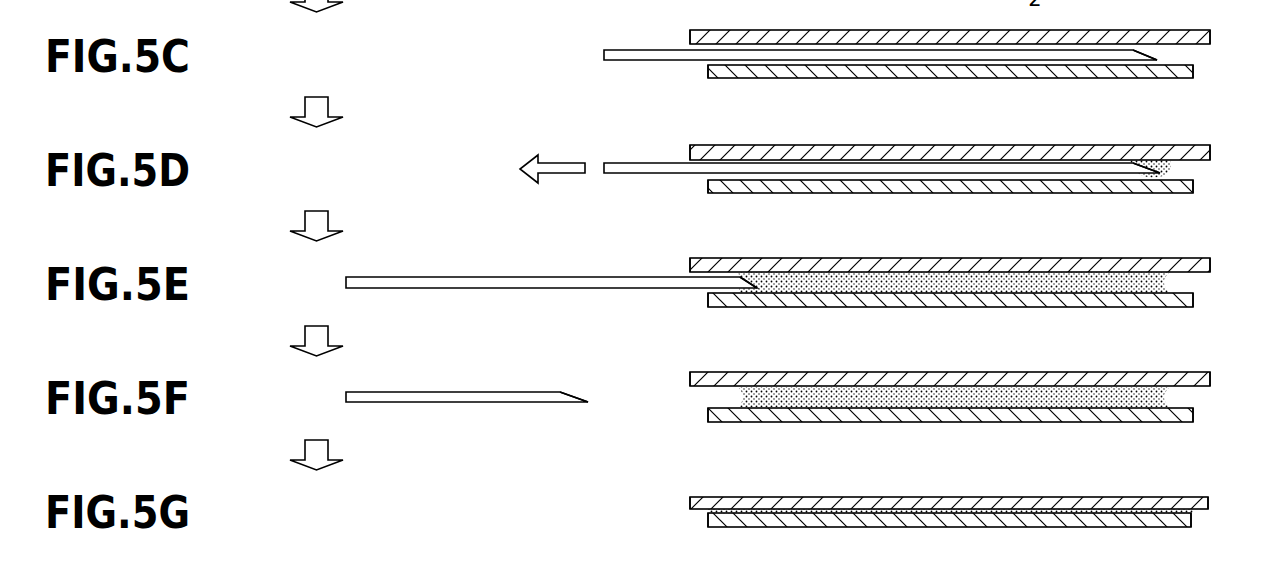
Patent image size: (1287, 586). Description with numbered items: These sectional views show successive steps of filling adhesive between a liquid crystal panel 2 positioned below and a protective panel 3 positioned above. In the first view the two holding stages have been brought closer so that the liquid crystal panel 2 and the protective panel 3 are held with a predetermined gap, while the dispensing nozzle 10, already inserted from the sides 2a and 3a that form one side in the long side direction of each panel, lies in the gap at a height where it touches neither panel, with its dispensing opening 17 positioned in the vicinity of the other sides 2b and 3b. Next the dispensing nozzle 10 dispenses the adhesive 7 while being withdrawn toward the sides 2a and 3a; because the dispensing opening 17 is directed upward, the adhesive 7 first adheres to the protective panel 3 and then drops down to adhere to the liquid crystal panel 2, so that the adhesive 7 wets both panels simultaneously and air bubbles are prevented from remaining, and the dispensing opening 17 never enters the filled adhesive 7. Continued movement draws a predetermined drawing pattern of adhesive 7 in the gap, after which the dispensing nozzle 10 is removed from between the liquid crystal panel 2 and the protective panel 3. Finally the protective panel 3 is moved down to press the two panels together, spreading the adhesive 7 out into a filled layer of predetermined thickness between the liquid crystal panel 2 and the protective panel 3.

In FIG. 5C, the liquid crystal panel 2 is at (1063, 72).
In FIG. 5D, the liquid crystal panel 2 is at (990, 187).
In FIG. 5E, the liquid crystal panel 2 is at (1063, 300).
In FIG. 5F, the liquid crystal panel 2 is at (990, 415).
In FIG. 5G, the liquid crystal panel 2 is at (1063, 522).
In FIG. 5C, the side of the liquid crystal panel 2a is at (708, 68).
In FIG. 5D, the side of the liquid crystal panel 2a is at (708, 183).
In FIG. 5E, the side of the liquid crystal panel 2a is at (708, 298).
In FIG. 5F, the side of the liquid crystal panel 2a is at (708, 413).
In FIG. 5G, the side of the liquid crystal panel 2a is at (708, 518).
In FIG. 5C, the other side of the liquid crystal panel 2b is at (1193, 70).
In FIG. 5D, the other side of the liquid crystal panel 2b is at (1193, 185).
In FIG. 5E, the other side of the liquid crystal panel 2b is at (1193, 298).
In FIG. 5F, the other side of the liquid crystal panel 2b is at (1193, 413).
In FIG. 5G, the other side of the liquid crystal panel 2b is at (1191, 520).
In FIG. 5C, the protective panel 3 is at (1063, 40).
In FIG. 5D, the protective panel 3 is at (990, 156).
In FIG. 5E, the protective panel 3 is at (1063, 268).
In FIG. 5F, the protective panel 3 is at (990, 382).
In FIG. 5G, the protective panel 3 is at (1063, 505).
In FIG. 5C, the side of the protective panel 3a is at (690, 41).
In FIG. 5D, the side of the protective panel 3a is at (690, 156).
In FIG. 5E, the side of the protective panel 3a is at (690, 268).
In FIG. 5F, the side of the protective panel 3a is at (690, 382).
In FIG. 5G, the side of the protective panel 3a is at (690, 505).
In FIG. 5C, the other side of the protective panel 3b is at (1210, 34).
In FIG. 5D, the other side of the protective panel 3b is at (1210, 150).
In FIG. 5E, the other side of the protective panel 3b is at (1210, 262).
In FIG. 5F, the other side of the protective panel 3b is at (1210, 378).
In FIG. 5G, the other side of the protective panel 3b is at (1208, 500).
In FIG. 5D, the adhesive 7 is at (1158, 173).
In FIG. 5E, the adhesive 7 is at (912, 278).
In FIG. 5F, the adhesive 7 is at (910, 398).
In FIG. 5G, the adhesive 7 is at (912, 510).
In FIG. 5C, the dispensing nozzle 10 is at (818, 52).
In FIG. 5D, the dispensing nozzle 10 is at (818, 165).
In FIG. 5E, the dispensing nozzle 10 is at (472, 277).
In FIG. 5F, the dispensing nozzle 10 is at (470, 392).
In FIG. 5C, the dispensing opening 17 is at (1148, 57).
In FIG. 5D, the dispensing opening 17 is at (1148, 160).
In FIG. 5E, the dispensing opening 17 is at (745, 282).
In FIG. 5F, the dispensing opening 17 is at (577, 397).